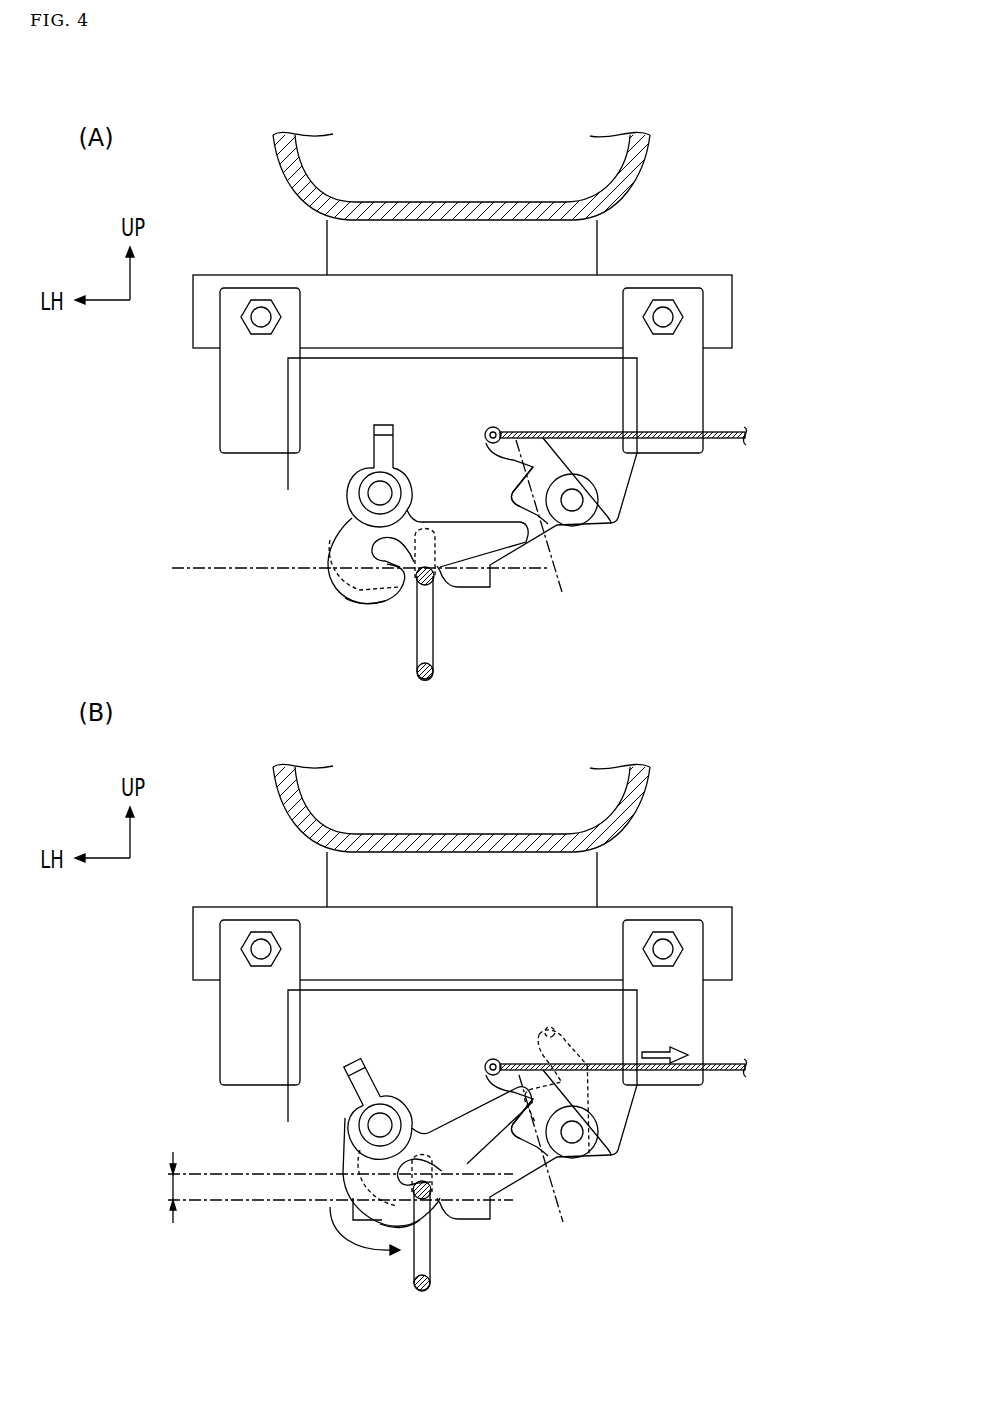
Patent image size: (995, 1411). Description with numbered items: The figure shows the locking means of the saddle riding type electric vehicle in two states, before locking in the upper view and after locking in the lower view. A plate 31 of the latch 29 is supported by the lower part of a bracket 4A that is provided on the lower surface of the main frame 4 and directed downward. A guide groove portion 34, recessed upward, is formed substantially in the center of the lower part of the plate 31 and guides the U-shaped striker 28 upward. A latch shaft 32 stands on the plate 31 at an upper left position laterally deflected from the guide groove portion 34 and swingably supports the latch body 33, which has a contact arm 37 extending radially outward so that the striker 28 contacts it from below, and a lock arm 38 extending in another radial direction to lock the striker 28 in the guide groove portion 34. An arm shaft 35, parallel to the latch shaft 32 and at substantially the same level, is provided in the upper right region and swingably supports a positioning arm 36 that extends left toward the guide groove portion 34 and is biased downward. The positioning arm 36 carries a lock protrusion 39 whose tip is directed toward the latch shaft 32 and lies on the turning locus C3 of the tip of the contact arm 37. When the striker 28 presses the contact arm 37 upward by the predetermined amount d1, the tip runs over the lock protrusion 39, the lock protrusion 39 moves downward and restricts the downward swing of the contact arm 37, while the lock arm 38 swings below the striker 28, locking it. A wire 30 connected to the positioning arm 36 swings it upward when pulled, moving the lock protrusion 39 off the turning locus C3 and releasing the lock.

The main frame 4 is at (638, 183).
The bracket 4A is at (612, 292).
The striker 28 is at (433, 650).
The latch 29 is at (630, 510).
The wire 30 is at (727, 432).
The plate 31 is at (296, 492).
The latch shaft 32 is at (362, 497).
The latch body 33 is at (324, 552).
The guide groove portion 34 is at (432, 582).
The arm shaft 35 is at (578, 508).
The positioning arm 36 is at (542, 510).
The contact arm 37 is at (468, 535).
The lock arm 38 is at (370, 598).
The lock protrusion 39 is at (521, 496).
The turning locus C3 is at (373, 846).
The predetermined amount d1 is at (157, 1187).